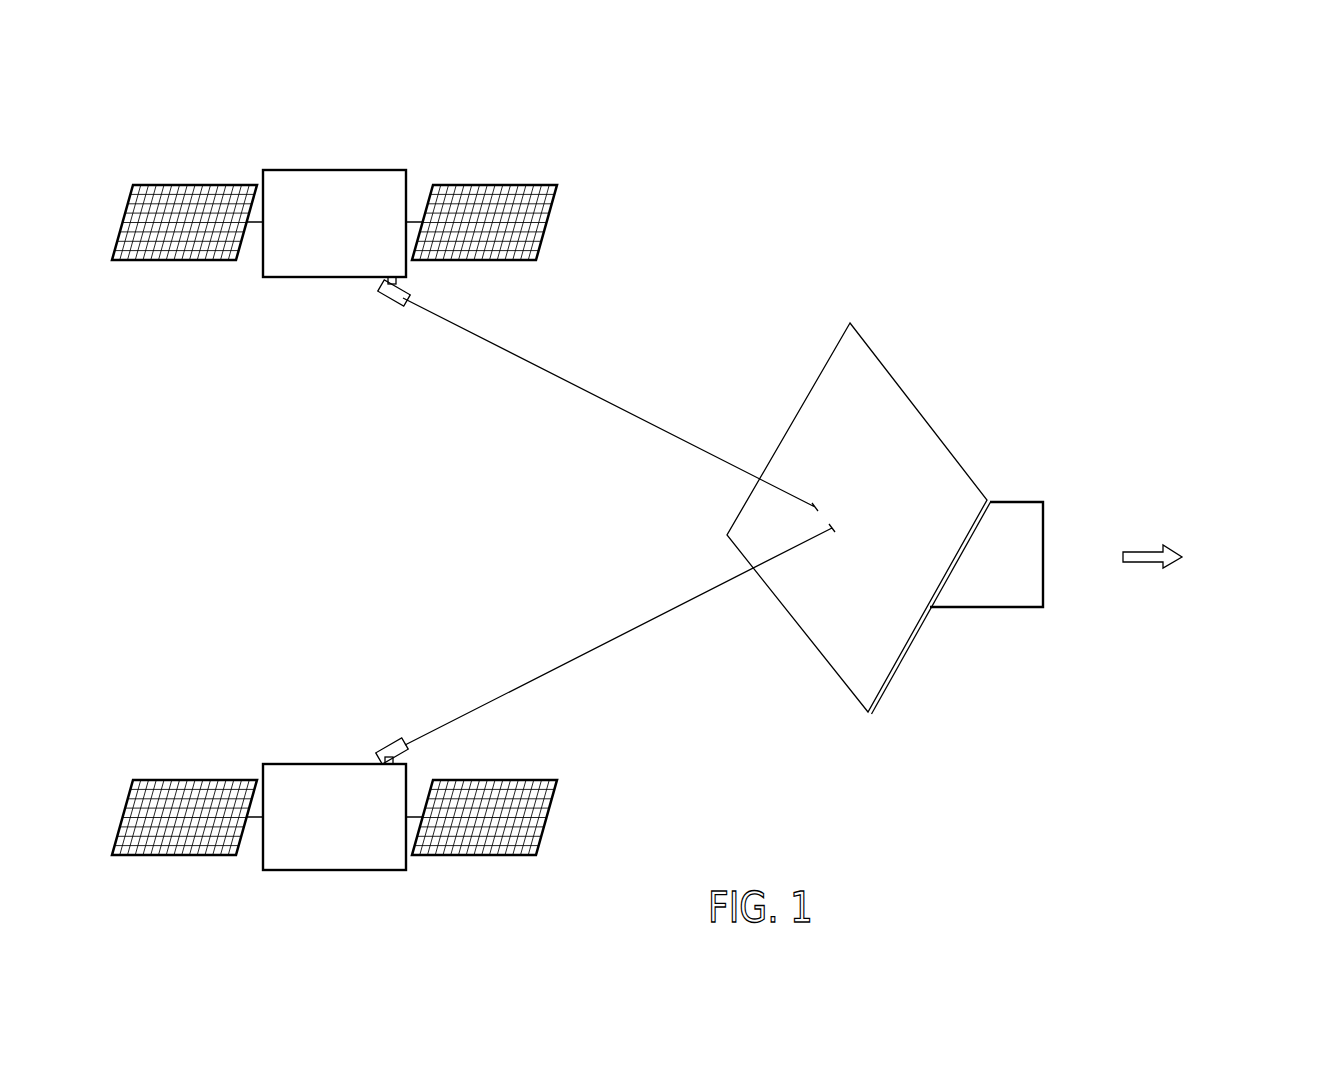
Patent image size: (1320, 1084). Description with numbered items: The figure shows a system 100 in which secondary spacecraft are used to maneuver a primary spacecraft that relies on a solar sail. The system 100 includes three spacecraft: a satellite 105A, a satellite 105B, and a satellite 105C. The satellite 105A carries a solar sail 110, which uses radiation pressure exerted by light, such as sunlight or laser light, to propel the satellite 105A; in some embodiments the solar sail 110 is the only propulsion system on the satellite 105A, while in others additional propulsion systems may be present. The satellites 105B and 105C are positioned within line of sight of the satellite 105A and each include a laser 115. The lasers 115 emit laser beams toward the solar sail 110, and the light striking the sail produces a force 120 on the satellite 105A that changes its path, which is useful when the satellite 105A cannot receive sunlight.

The system 100 is at (1190, 158).
The satellite 105A is at (1020, 502).
The satellite 105B is at (325, 170).
The satellite 105C is at (275, 764).
The solar sail 110 is at (875, 347).
The laser 115 is at (387, 740).
The force 120 is at (1150, 548).